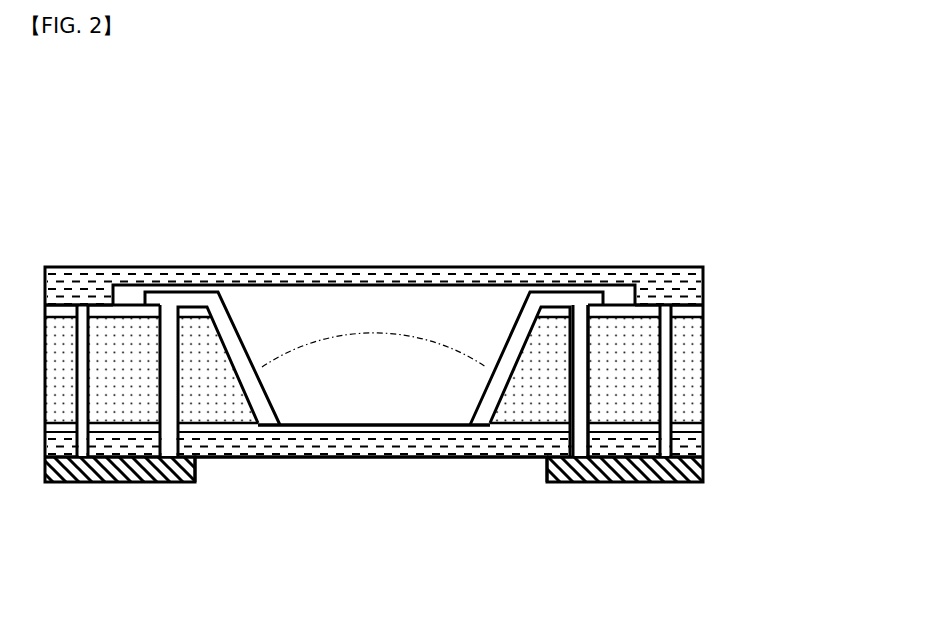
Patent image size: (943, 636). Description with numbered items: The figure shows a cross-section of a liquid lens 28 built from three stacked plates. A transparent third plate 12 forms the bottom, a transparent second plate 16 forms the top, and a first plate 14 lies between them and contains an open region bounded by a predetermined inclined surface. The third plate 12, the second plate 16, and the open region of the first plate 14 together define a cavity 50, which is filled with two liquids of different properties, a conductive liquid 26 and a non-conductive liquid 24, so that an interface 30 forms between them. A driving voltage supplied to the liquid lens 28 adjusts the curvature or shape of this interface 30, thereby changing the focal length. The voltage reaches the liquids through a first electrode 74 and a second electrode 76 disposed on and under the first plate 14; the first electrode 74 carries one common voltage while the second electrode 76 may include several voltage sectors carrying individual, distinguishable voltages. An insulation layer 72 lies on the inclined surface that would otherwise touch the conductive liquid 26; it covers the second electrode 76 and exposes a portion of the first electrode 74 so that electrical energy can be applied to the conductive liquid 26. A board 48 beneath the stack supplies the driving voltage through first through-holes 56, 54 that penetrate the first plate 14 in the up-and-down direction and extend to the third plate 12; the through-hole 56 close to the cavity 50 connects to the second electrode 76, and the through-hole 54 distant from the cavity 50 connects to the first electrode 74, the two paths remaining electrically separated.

The third plate 12 is at (375, 469).
The first plate 14 is at (719, 369).
The second plate 16 is at (378, 258).
The non-conductive liquid 24 is at (339, 405).
The conductive liquid 26 is at (333, 300).
The liquid lens 28 is at (540, 170).
The interface 30 is at (425, 325).
The board 48 is at (627, 494).
The cavity 50 is at (440, 437).
The first through-hole 54 is at (690, 388).
The first through-hole 56 is at (592, 381).
The insulation layer 72 is at (234, 293).
The first electrode 74 is at (719, 307).
The second electrode 76 is at (538, 447).